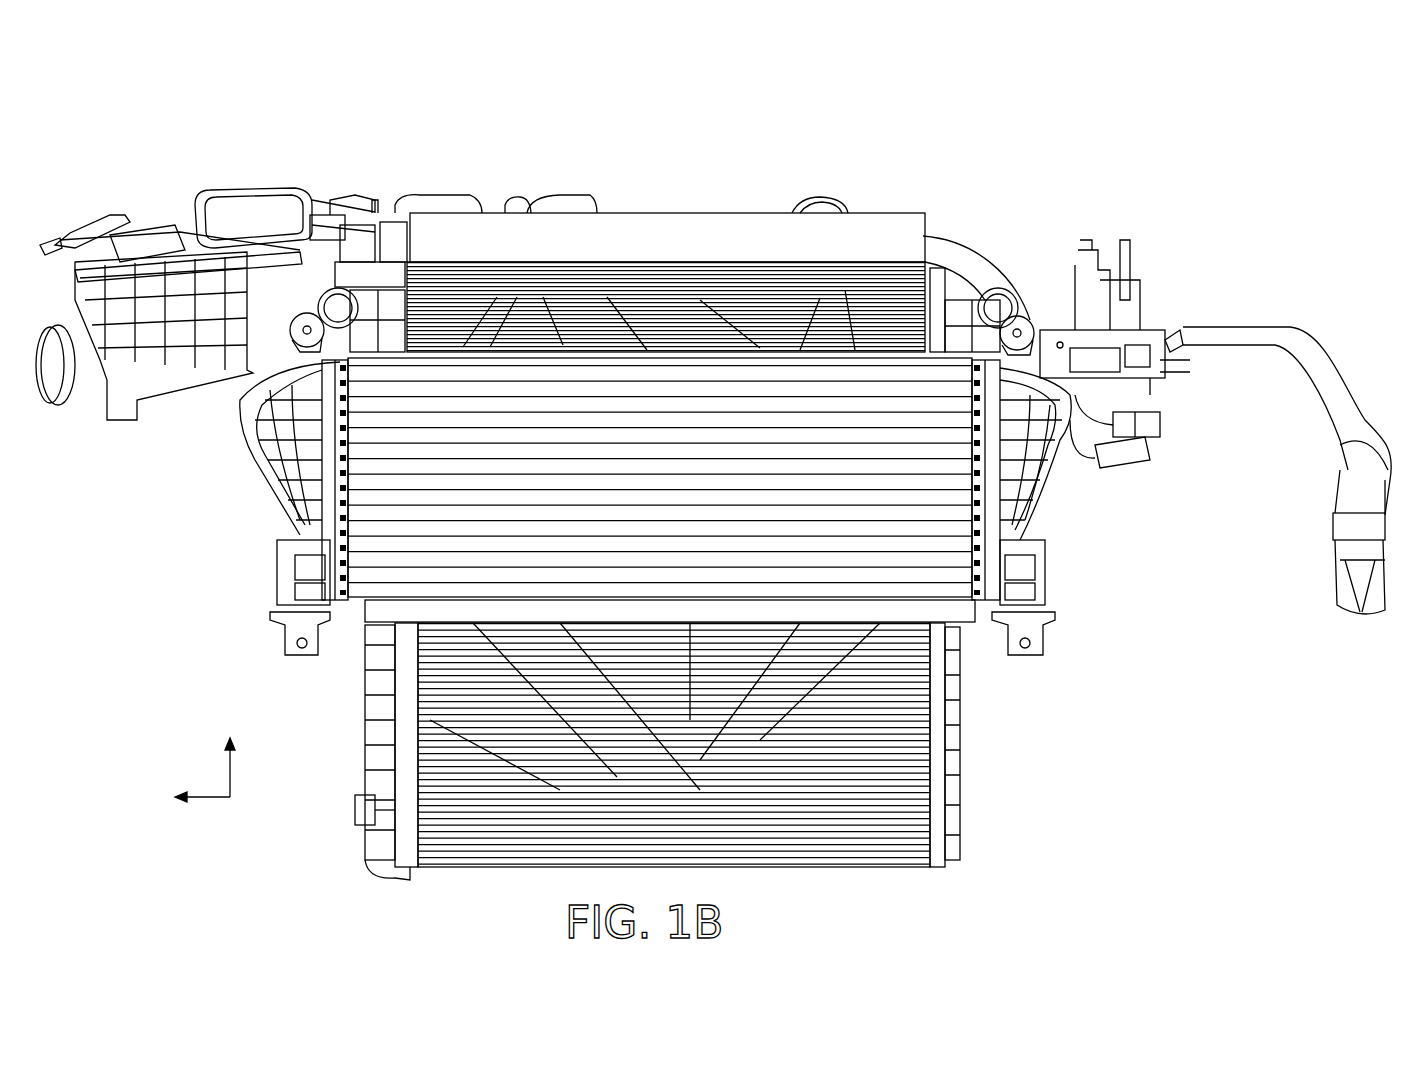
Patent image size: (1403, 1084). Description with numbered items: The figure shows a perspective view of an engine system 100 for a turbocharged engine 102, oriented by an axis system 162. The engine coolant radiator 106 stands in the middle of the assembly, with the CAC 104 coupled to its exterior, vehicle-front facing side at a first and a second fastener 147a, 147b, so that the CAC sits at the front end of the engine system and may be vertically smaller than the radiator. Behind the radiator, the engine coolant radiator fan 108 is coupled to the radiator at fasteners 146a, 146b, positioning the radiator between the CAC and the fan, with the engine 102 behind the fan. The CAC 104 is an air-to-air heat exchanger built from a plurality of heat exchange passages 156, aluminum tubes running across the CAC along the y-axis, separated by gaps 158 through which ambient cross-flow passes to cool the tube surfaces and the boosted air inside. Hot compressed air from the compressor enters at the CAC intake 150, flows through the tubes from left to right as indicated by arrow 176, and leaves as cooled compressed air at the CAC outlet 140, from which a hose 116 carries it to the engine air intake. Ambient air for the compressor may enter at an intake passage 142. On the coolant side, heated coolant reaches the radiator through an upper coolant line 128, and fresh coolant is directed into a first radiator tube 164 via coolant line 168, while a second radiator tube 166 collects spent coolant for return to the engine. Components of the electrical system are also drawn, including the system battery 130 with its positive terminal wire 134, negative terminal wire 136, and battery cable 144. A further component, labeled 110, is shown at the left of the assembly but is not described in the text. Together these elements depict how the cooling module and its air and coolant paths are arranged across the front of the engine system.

The engine system 100 is at (1250, 86).
The engine 102 is at (742, 182).
The CAC 104 is at (673, 443).
The engine coolant radiator 106 is at (683, 248).
The engine coolant radiator fan 108 is at (355, 694).
The air box 110 is at (120, 225).
The hose 116 is at (945, 247).
The upper coolant line 128 is at (420, 195).
The system battery 130 is at (1172, 266).
The positive terminal wire 134 is at (1138, 470).
The negative terminal wire 136 is at (1160, 432).
The CAC outlet 140 is at (1030, 445).
The intake passage 142 is at (218, 192).
The battery cable 144 is at (1330, 352).
The fastener 146a is at (320, 320).
The fastener 146b is at (1003, 312).
The first fastener 147a is at (296, 345).
The second fastener 147b is at (1015, 318).
The CAC intake 150 is at (282, 430).
The heat exchange passages 156 is at (863, 387).
The gaps 158 is at (843, 387).
The axis system 162 is at (195, 703).
The first radiator tube 164 is at (395, 818).
The second radiator tube 166 is at (940, 757).
The coolant line 168 is at (243, 270).
The arrow 176 is at (288, 523).